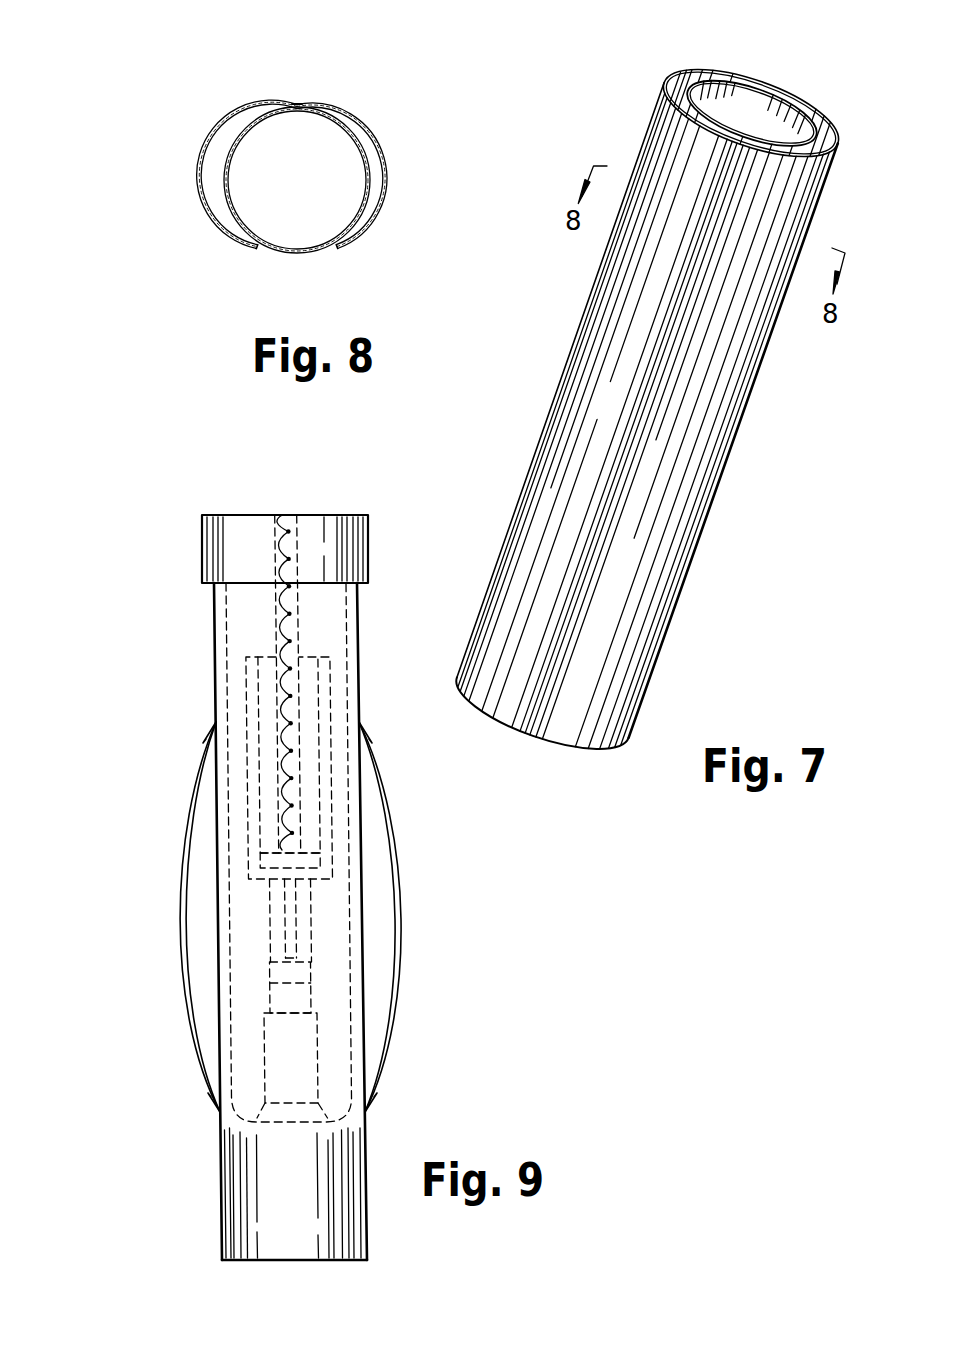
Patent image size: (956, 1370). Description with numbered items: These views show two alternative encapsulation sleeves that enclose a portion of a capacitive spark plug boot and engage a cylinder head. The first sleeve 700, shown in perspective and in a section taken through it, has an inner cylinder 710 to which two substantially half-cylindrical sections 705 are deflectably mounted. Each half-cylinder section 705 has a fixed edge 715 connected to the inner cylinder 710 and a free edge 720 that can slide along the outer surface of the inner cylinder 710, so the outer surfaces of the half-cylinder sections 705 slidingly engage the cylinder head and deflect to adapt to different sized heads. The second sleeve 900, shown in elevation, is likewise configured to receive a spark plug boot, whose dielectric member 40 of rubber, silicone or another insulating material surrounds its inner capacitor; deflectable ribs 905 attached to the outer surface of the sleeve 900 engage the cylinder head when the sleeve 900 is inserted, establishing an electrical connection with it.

In FIG. 7, the sleeve 700 is at (603, 91).
In FIG. 8, the sleeve 700 is at (181, 135).
In FIG. 7, the half-cylindrical sections 705 is at (672, 76).
In FIG. 8, the half-cylindrical sections 705 is at (390, 154).
In FIG. 7, the inner cylinder 710 is at (766, 82).
In FIG. 8, the inner cylinder 710 is at (303, 248).
In FIG. 7, the fixed edge 715 is at (628, 407).
In FIG. 8, the fixed edge 715 is at (301, 106).
In FIG. 8, the free edge 720 is at (263, 249).
In FIG. 9, the sleeve 900 is at (178, 620).
In FIG. 9, the dielectric member 40 is at (362, 551).
In FIG. 9, the deflectable ribs 905 is at (186, 891).